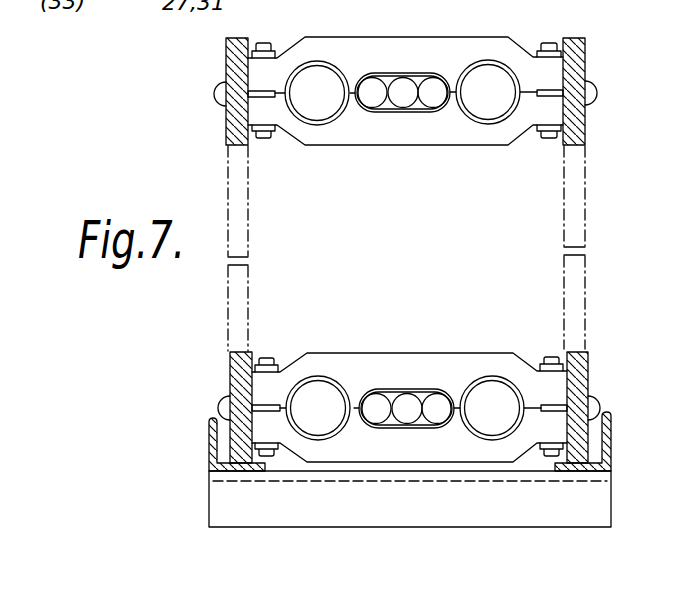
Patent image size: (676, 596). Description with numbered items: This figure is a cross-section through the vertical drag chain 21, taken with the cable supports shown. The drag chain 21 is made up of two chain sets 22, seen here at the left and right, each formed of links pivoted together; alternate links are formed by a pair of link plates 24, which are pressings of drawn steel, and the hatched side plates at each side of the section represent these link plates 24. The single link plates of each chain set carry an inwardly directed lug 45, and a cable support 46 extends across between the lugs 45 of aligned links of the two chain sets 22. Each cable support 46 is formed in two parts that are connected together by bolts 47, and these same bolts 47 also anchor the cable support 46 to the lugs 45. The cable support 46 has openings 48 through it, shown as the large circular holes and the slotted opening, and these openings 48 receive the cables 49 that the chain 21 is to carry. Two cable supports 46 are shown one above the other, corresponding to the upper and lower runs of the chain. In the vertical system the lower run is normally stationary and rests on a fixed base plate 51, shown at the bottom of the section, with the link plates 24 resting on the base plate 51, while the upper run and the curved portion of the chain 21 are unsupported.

The drag chain 21 is at (596, 198).
The chain set 22 is at (380, 256).
The link plate 24 is at (240, 118).
The lug 45 is at (258, 100).
The cable support 46 is at (392, 133).
The bolt 47 is at (259, 43).
The opening 48 is at (390, 73).
The cable 49 is at (407, 97).
The base plate 51 is at (597, 471).